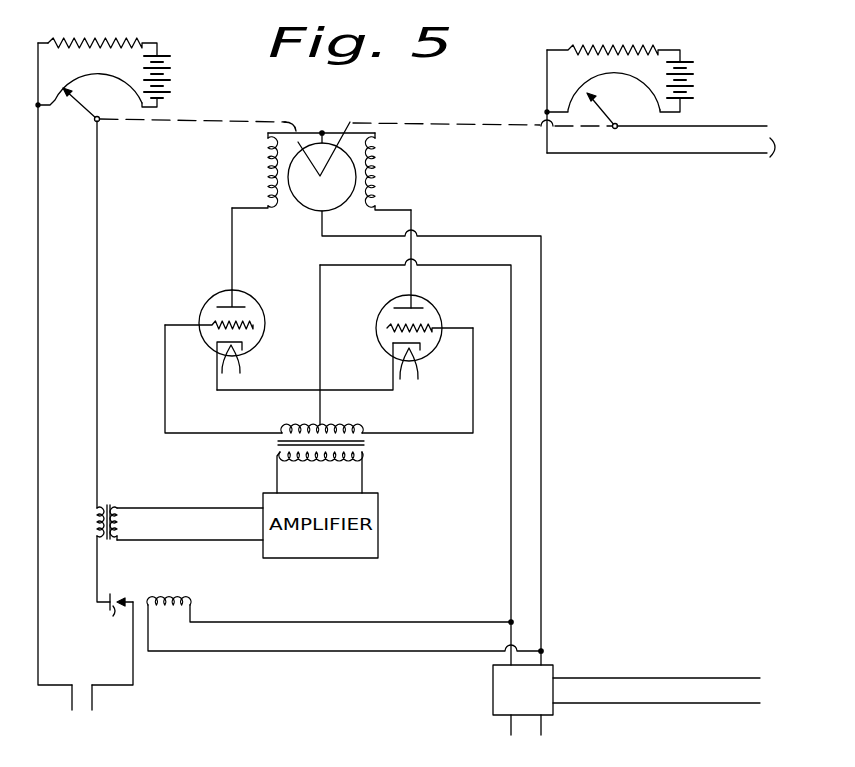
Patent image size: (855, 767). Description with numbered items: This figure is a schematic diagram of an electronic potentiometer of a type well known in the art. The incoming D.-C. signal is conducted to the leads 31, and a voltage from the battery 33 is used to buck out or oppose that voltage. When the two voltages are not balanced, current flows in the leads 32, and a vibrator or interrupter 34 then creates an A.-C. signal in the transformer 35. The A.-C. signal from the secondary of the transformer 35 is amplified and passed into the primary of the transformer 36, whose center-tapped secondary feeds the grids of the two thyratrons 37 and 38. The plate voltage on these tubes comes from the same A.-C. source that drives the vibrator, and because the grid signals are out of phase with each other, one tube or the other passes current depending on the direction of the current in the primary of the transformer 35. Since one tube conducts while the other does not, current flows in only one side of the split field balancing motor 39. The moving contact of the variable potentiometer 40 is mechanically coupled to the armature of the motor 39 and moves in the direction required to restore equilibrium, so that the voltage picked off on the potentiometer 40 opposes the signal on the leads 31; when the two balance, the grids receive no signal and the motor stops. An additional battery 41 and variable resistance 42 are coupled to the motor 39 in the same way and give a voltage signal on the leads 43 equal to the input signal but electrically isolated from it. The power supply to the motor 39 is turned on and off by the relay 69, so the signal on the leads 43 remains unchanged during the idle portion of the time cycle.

The leads 31 is at (80, 705).
The leads 32 is at (38, 443).
The battery 33 is at (168, 72).
The vibrator or interrupter 34 is at (112, 619).
The transformer 35 is at (105, 538).
The transformer 36 is at (363, 443).
The thyratron 37 is at (252, 300).
The thyratron 38 is at (438, 308).
The split field balancing motor 39 is at (321, 166).
The variable potentiometer 40 is at (57, 96).
The battery 41 is at (693, 80).
The variable resistance 42 is at (567, 105).
The leads 43 is at (661, 158).
The relay 69 is at (453, 666).